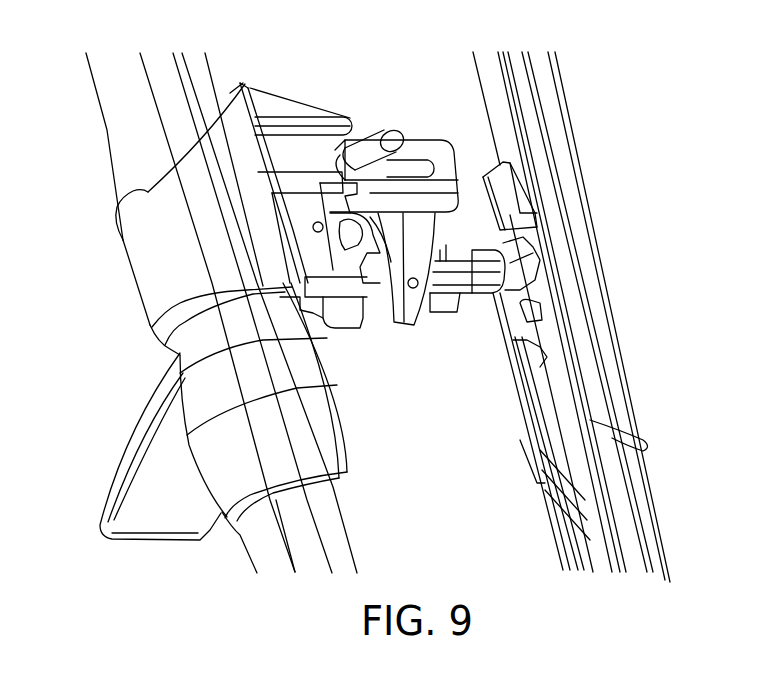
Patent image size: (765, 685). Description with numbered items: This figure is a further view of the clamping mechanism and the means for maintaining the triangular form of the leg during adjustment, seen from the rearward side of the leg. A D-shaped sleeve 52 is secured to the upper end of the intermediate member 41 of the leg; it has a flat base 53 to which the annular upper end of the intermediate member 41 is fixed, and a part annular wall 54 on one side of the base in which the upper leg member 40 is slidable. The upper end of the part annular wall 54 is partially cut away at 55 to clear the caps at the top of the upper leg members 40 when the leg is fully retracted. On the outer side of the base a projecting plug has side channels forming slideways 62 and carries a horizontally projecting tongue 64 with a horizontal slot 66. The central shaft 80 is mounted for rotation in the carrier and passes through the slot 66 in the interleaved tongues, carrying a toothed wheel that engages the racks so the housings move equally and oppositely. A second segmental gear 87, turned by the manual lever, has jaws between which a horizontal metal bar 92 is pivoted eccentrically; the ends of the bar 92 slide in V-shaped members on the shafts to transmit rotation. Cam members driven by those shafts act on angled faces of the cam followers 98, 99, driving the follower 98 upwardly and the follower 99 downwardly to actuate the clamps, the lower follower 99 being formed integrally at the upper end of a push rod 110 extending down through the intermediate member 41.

The upper leg member 40 is at (97, 95).
The intermediate member 41 is at (247, 553).
The sleeve 52 is at (268, 102).
The flat base 53 is at (245, 84).
The part annular wall 54 is at (138, 293).
The cut away 55 is at (128, 198).
The slideway 62 is at (318, 128).
The tongue 64 is at (430, 145).
The slot 66 is at (420, 147).
The central shaft 80 is at (382, 138).
The second segmental gear 87 is at (338, 326).
The metal bar 92 is at (450, 296).
The cam follower 98 is at (398, 322).
The cam follower 99 is at (548, 286).
The push rod 110 is at (560, 388).